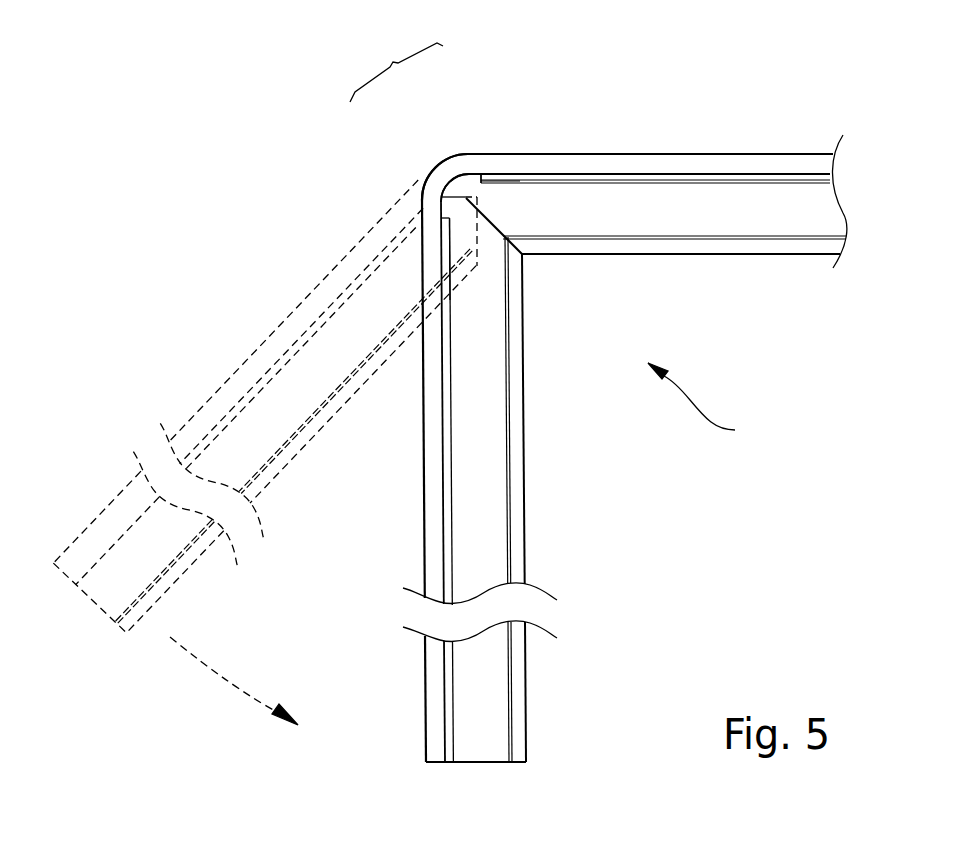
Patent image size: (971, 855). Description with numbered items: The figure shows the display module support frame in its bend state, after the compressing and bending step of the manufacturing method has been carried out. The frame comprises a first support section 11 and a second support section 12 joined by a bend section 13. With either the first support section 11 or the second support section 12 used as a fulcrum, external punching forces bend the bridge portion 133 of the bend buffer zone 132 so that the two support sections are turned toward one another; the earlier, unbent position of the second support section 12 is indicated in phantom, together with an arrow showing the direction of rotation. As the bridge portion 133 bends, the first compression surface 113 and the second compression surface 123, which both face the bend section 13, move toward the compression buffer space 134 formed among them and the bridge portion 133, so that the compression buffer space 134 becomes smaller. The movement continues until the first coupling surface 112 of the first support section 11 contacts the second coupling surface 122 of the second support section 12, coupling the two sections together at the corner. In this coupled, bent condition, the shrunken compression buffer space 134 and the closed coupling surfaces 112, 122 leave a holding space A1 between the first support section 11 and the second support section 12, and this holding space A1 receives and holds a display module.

The first support section 11 is at (820, 218).
The second support section 12 is at (470, 563).
The bend section 13 is at (423, 184).
The first coupling surface 112 is at (493, 227).
The first compression surface 113 is at (476, 183).
The second coupling surface 122 is at (504, 236).
The second compression surface 123 is at (440, 217).
The bend buffer zone 132 is at (396, 65).
The bridge portion 133 is at (453, 178).
The compression buffer space 134 is at (467, 184).
The holding space A1 is at (704, 404).